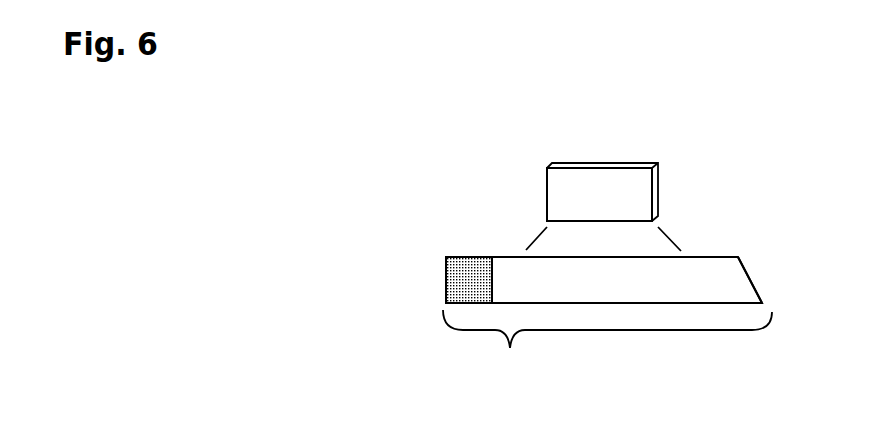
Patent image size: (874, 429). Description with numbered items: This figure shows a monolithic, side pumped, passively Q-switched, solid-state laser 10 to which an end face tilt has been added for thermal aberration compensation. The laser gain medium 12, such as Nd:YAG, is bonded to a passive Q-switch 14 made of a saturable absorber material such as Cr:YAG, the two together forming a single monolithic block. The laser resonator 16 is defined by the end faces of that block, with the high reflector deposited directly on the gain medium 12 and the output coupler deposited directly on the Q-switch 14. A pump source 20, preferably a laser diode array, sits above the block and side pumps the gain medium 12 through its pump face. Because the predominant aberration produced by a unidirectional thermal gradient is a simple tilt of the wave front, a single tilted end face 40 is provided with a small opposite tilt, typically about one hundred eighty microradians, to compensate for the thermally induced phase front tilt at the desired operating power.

The laser 10 is at (362, 244).
The laser gain medium 12 is at (508, 270).
The passive Q-switch 14 is at (448, 292).
The laser resonator 16 is at (607, 344).
The pump source 20 is at (645, 185).
The tilted end face 40 is at (750, 282).